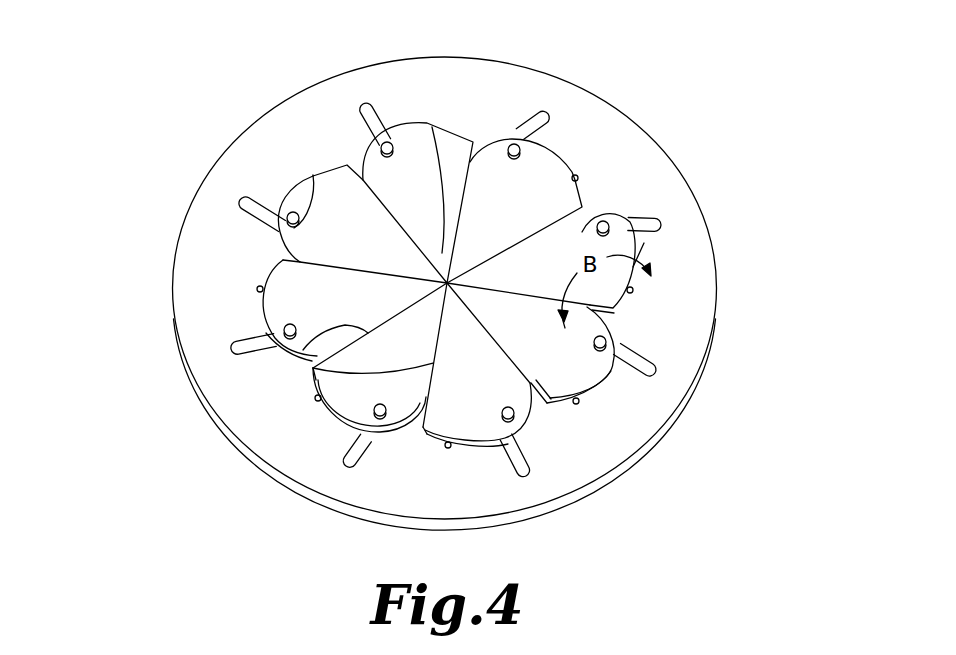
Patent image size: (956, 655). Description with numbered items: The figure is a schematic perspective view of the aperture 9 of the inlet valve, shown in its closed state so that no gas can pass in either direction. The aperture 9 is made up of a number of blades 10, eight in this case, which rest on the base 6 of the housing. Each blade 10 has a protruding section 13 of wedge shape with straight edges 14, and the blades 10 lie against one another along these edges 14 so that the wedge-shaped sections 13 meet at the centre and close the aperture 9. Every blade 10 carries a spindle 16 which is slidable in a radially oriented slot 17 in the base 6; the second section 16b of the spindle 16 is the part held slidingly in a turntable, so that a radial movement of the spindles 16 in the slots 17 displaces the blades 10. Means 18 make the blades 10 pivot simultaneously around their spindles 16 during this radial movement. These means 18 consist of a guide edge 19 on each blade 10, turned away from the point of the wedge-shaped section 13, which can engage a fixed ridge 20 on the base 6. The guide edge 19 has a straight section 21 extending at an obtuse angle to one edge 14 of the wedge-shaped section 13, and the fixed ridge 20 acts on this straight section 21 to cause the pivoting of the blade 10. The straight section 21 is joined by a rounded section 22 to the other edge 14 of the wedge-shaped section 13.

The base 6 is at (278, 152).
The aperture 9 is at (190, 185).
The blades 10 is at (598, 215).
The protruding section 13 is at (432, 127).
The edges 14 is at (303, 353).
The spindle 16 is at (292, 212).
The second section 16b is at (310, 172).
The slot 17 is at (240, 200).
The means 18 is at (317, 150).
The guide edge 19 is at (397, 125).
The fixed ridge 20 is at (315, 172).
The straight section 21 is at (458, 133).
The rounded section 22 is at (362, 115).